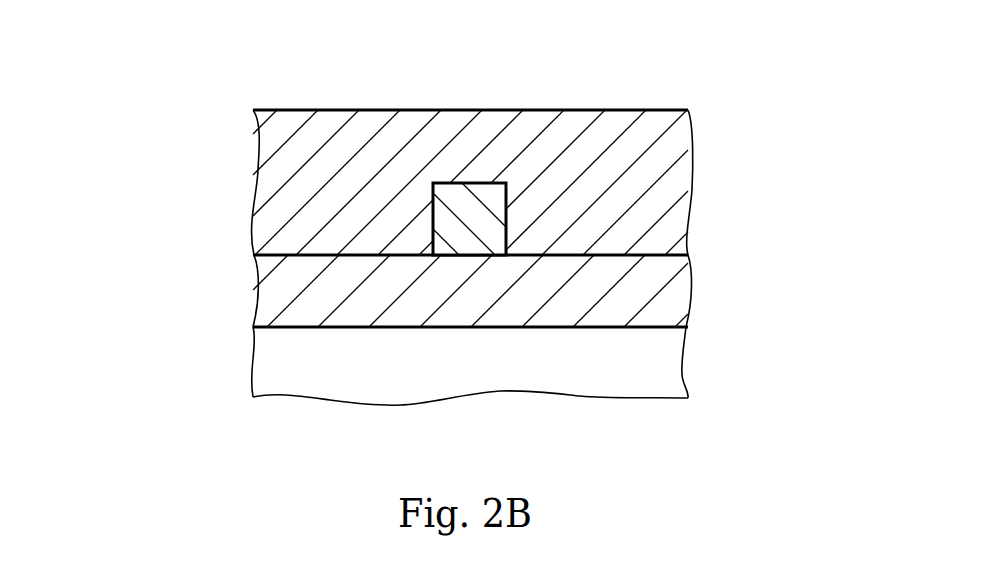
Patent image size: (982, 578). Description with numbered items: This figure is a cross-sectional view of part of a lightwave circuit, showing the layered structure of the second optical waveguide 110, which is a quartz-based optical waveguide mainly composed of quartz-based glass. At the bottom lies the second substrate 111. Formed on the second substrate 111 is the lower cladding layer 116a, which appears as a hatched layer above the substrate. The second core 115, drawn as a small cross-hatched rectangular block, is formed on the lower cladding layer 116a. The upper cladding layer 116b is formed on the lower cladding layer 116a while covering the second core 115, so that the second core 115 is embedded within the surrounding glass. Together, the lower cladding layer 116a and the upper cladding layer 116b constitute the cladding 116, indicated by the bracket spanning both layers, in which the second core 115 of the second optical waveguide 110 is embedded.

The second optical waveguide 110 is at (461, 256).
The second substrate 111 is at (683, 366).
The second core 115 is at (445, 213).
The cladding 116 is at (565, 217).
The lower cladding layer 116a is at (522, 291).
The upper cladding layer 116b is at (689, 185).